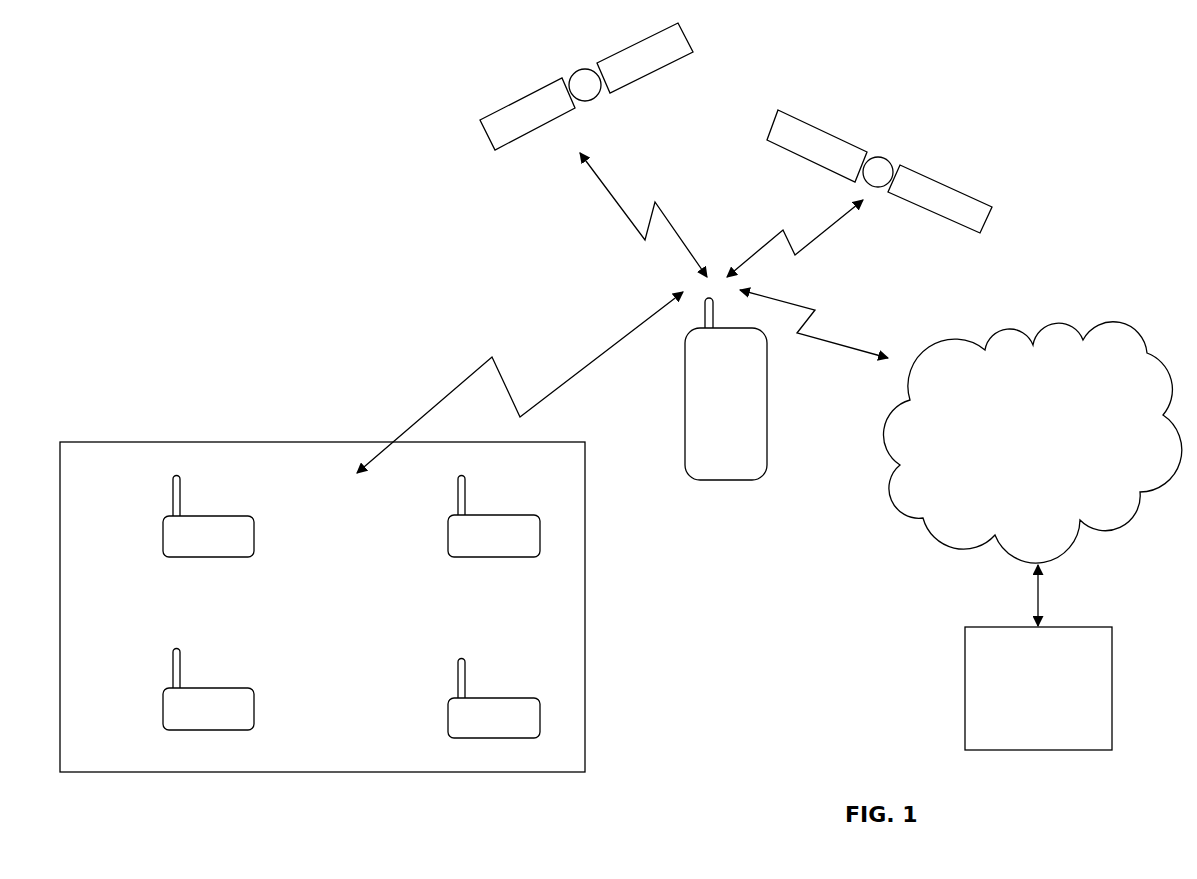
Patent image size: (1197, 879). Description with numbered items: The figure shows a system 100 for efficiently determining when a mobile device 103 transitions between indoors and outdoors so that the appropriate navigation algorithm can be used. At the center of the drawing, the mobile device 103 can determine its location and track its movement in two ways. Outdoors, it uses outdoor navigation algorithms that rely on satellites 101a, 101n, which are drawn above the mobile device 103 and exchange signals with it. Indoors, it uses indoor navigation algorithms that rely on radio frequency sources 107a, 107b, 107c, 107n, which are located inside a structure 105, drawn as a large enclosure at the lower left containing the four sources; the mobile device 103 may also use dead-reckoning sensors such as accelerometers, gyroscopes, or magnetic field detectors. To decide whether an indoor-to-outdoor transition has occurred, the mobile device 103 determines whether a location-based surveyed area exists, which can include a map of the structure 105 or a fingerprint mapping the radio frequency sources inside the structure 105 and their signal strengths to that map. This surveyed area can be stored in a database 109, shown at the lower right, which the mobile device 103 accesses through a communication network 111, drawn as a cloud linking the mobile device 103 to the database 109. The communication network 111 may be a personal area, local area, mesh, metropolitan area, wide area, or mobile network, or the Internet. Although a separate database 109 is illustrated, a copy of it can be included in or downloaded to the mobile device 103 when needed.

The system 100 is at (1067, 85).
The satellite 101a is at (530, 86).
The satellite 101n is at (767, 130).
The mobile device 103 is at (685, 388).
The structure 105 is at (562, 489).
The radio frequency source 107a is at (163, 538).
The radio frequency source 107b is at (163, 710).
The radio frequency source 107c is at (448, 538).
The radio frequency source 107n is at (448, 720).
The database 109 is at (1055, 725).
The communication network 111 is at (1050, 453).